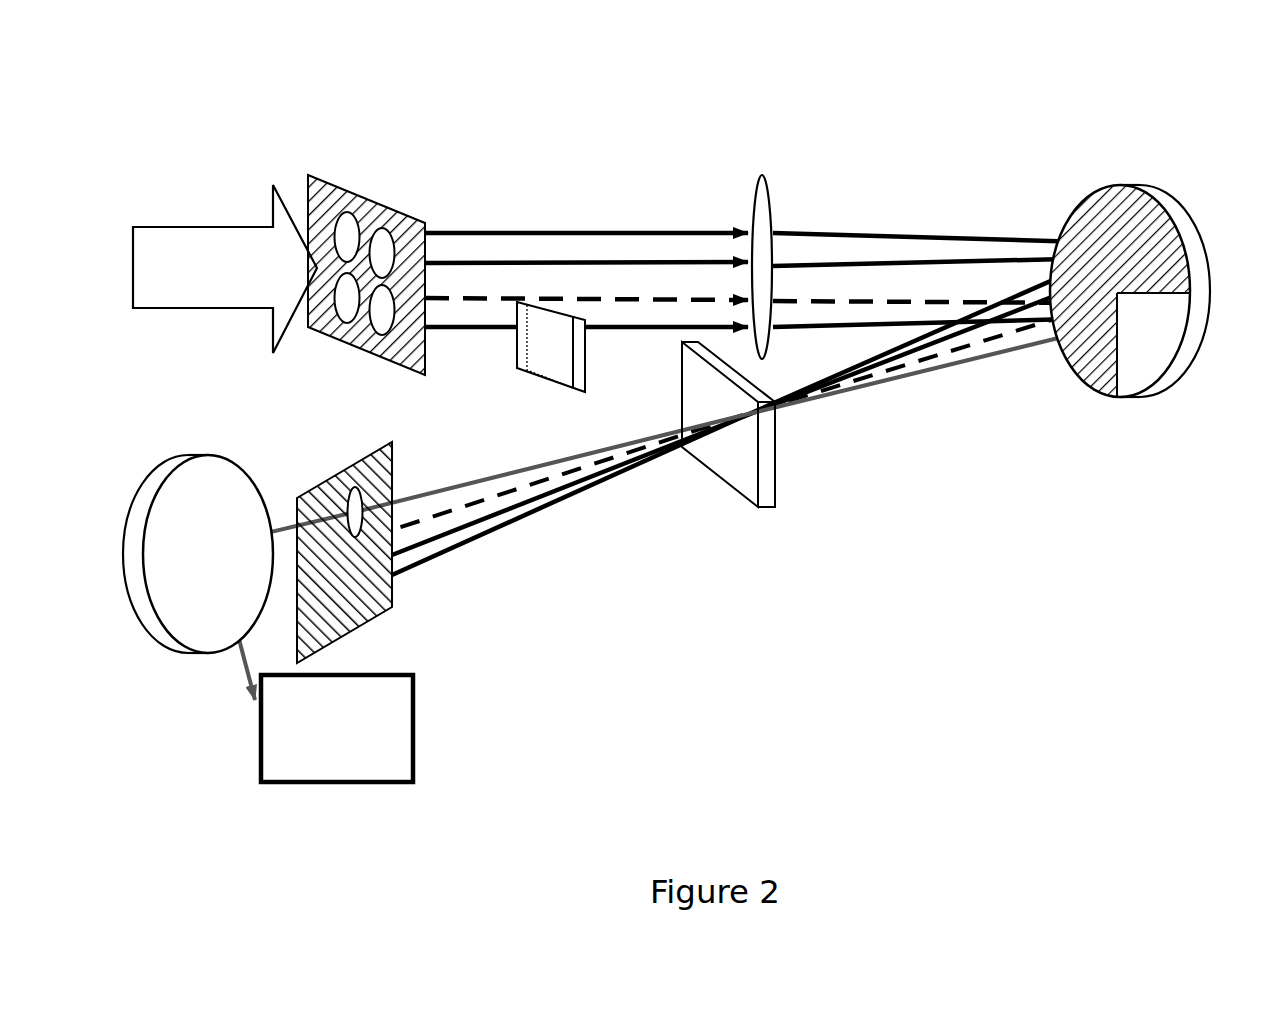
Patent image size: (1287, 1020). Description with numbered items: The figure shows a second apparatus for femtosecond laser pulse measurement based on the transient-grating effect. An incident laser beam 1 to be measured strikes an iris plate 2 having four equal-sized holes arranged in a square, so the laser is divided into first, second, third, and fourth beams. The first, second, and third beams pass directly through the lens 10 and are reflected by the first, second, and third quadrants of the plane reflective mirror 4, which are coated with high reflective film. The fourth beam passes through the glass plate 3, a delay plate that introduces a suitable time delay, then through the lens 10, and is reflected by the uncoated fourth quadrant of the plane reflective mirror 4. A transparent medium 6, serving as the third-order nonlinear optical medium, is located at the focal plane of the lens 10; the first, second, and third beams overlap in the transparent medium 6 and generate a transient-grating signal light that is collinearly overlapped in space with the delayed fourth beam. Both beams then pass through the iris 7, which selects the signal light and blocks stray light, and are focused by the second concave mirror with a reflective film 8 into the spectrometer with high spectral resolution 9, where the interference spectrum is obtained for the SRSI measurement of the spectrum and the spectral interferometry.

The incident laser beam 1 is at (183, 212).
The iris plate 2 is at (400, 207).
The glass plate 3 is at (504, 372).
The plane reflective mirror 4 is at (1107, 172).
The transparent medium 6 is at (740, 513).
The iris 7 is at (381, 630).
The second concave mirror with a reflective film 8 is at (179, 443).
The spectrometer with high spectral resolution 9 is at (426, 723).
The lens 10 is at (779, 172).